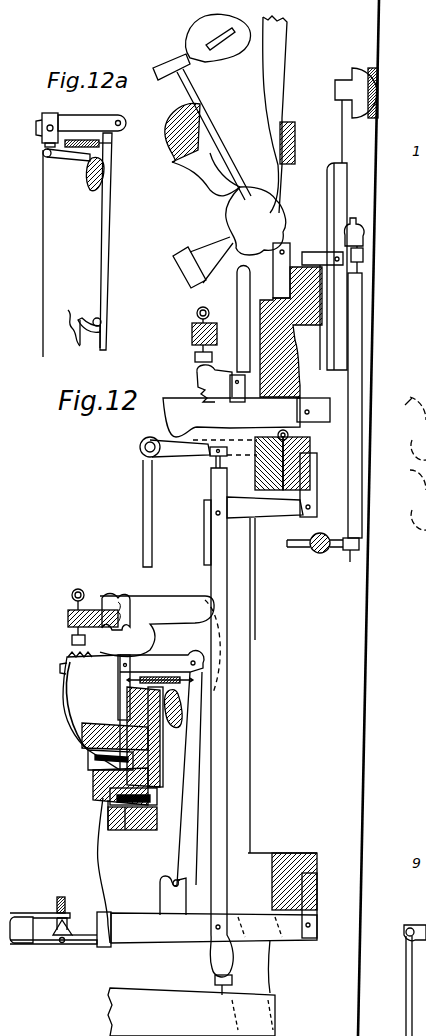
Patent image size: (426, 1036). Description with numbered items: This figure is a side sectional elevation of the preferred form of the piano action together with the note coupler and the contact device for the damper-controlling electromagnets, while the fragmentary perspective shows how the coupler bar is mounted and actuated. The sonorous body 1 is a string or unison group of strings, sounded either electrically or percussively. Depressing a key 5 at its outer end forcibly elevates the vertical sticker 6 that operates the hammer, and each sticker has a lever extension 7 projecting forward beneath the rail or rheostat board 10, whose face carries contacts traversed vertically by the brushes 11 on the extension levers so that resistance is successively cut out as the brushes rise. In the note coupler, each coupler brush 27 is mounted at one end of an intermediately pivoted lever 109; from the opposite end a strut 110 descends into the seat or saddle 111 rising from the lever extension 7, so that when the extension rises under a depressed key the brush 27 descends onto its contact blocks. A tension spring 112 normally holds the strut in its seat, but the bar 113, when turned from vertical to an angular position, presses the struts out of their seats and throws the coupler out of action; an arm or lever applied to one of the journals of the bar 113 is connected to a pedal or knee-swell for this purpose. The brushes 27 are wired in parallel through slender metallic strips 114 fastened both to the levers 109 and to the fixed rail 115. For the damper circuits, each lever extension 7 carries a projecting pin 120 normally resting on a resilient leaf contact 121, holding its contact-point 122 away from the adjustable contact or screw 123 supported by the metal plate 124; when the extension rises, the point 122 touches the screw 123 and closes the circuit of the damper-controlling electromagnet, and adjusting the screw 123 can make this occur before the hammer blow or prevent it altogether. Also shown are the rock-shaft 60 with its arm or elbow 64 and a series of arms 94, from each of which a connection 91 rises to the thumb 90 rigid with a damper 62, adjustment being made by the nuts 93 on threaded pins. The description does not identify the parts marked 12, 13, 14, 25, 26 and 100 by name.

In FIG. 12, the sonorous body 1 is at (362, 700).
In FIG. 12, the key 5 is at (110, 1005).
In FIG. 12, the vertical sticker 6 is at (222, 803).
In FIG. 12, the lever extension 7 is at (200, 935).
In FIG. 12, the rail or rheostat board 10 is at (145, 832).
In FIG. 12, the brush 11 is at (100, 860).
In FIG. 12, the pin 12 is at (120, 832).
In FIG. 12, the block 13 is at (108, 815).
In FIG. 12, the plate 14 is at (110, 795).
In FIG. 12, the wedge block 25 is at (95, 775).
In FIG. 12, the slide 26 is at (85, 758).
In FIG. 12, the coupler brush 27 is at (68, 716).
In FIG. 12, the rock-shaft 60 is at (320, 554).
In FIG. 12, the damper 62 is at (376, 95).
In FIG. 12, the arm or elbow 64 is at (295, 548).
In FIG. 12, the thumb 90 is at (364, 235).
In FIG. 12, the connection 91 is at (360, 376).
In FIG. 12, the nut 93 is at (364, 255).
In FIG. 12, the arm 94 is at (350, 564).
In FIG. 12, the link 100 is at (410, 971).
In FIG. 12A, the pivoted lever 109 is at (84, 118).
In FIG. 12, the pivoted lever 109 is at (93, 672).
In FIG. 12A, the strut 110 is at (110, 208).
In FIG. 12, the strut 110 is at (187, 757).
In FIG. 12A, the seat or saddle 111 is at (84, 307).
In FIG. 12, the seat or saddle 111 is at (160, 897).
In FIG. 12A, the tension spring 112 is at (112, 134).
In FIG. 12, the tension spring 112 is at (160, 677).
In FIG. 12A, the bar 113 is at (88, 176).
In FIG. 12, the bar 113 is at (180, 703).
In FIG. 12, the metallic strip 114 is at (153, 620).
In FIG. 12, the fixed rail 115 is at (68, 619).
In FIG. 12, the projecting pin 120 is at (90, 942).
In FIG. 12, the resilient leaf contact 121 is at (46, 940).
In FIG. 12, the contact-point 122 is at (60, 944).
In FIG. 12, the adjustable contact 123 is at (58, 903).
In FIG. 12, the metal plate 124 is at (66, 918).